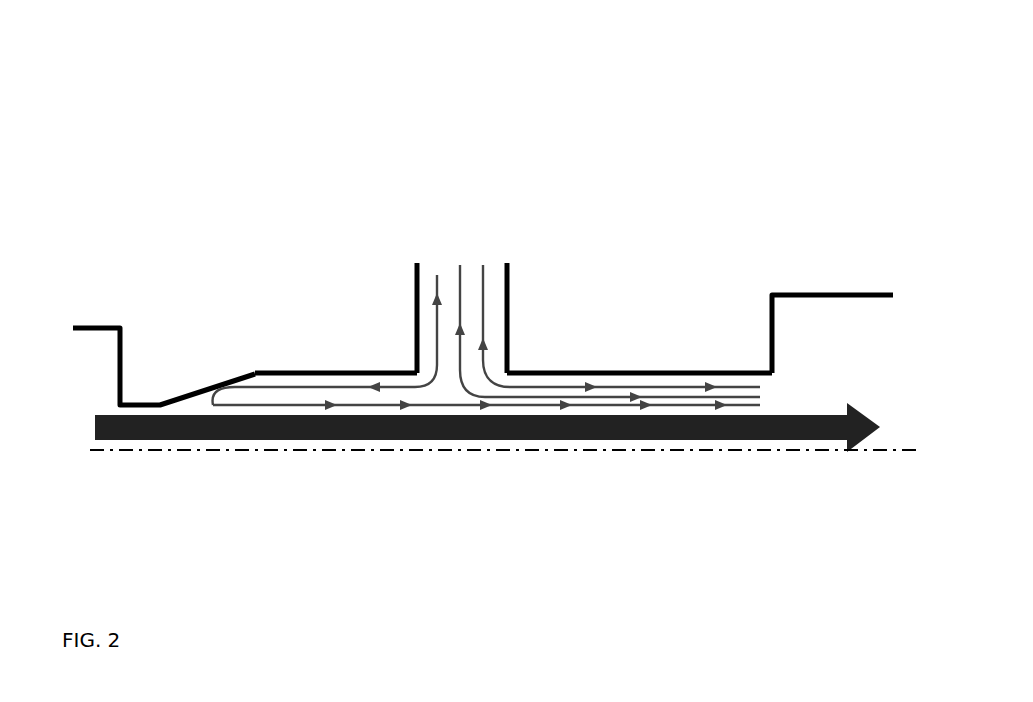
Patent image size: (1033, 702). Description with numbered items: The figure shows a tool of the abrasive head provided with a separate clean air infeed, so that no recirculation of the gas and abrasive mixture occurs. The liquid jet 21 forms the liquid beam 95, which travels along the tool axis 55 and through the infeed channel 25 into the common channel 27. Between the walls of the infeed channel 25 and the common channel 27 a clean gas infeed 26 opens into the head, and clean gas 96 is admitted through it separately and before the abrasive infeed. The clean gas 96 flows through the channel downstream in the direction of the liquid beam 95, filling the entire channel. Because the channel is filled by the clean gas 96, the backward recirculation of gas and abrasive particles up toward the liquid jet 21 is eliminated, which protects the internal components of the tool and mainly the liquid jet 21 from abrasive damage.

The liquid jet 21 is at (120, 348).
The infeed channel 25 is at (335, 362).
The clean gas infeed 26 is at (505, 315).
The common channel 27 is at (817, 293).
The clean gas 96 is at (297, 387).
The liquid beam 95 is at (875, 425).
The tool axis 55 is at (70, 450).